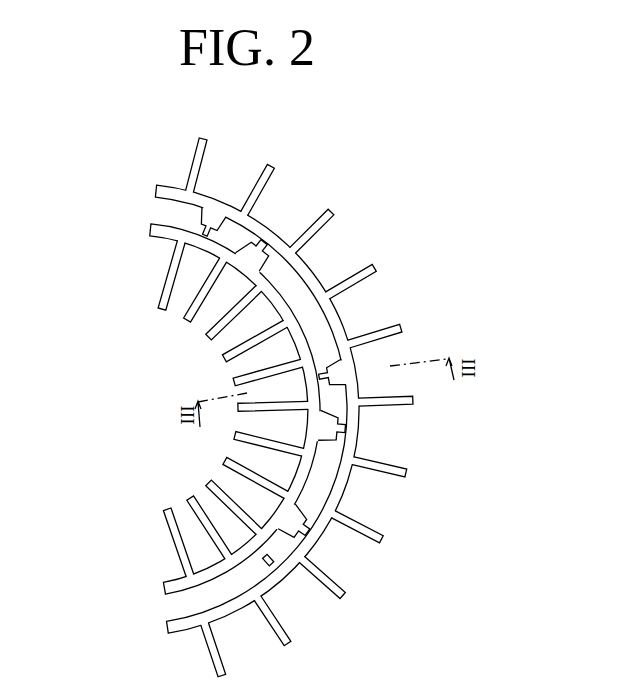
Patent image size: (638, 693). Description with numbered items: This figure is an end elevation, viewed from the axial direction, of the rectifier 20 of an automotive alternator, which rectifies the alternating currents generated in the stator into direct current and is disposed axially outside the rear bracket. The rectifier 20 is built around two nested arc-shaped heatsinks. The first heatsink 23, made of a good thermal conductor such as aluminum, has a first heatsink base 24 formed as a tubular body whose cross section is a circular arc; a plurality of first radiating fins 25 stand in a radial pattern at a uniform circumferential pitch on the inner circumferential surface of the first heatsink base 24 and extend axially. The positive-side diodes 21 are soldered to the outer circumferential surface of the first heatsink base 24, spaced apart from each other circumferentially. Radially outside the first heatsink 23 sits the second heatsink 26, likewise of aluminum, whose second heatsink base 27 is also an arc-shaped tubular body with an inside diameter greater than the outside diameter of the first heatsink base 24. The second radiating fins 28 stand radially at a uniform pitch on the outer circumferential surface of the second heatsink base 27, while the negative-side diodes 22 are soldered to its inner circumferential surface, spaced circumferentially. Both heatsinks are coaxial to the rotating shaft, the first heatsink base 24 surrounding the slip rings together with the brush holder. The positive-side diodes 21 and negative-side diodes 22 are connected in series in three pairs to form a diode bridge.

The rectifier 20 is at (104, 133).
The positive-side diode 21 is at (358, 427).
The negative-side diode 22 is at (310, 528).
The first heatsink 23 is at (160, 263).
The first heatsink base 24 is at (152, 229).
The first radiating fin 25 is at (165, 296).
The second heatsink 26 is at (330, 268).
The second heatsink base 27 is at (347, 317).
The second radiating fin 28 is at (333, 212).